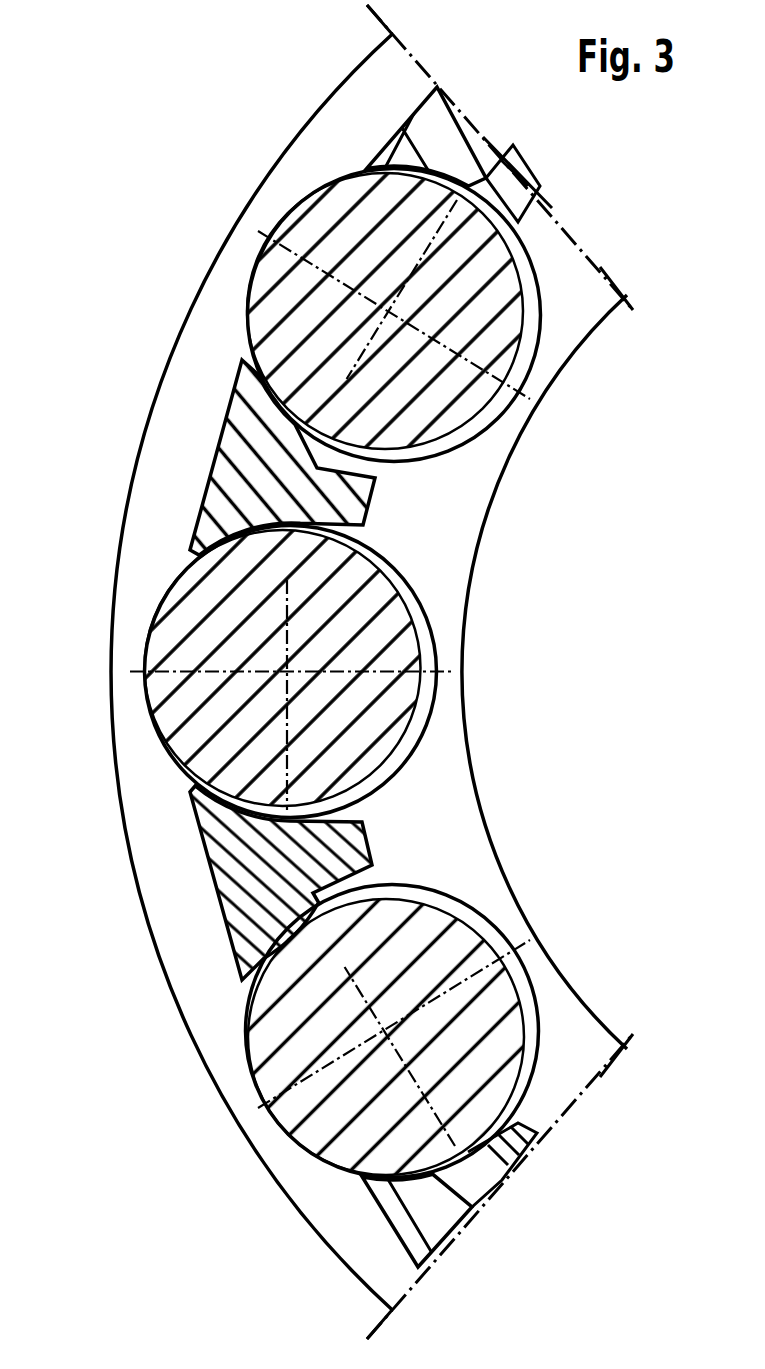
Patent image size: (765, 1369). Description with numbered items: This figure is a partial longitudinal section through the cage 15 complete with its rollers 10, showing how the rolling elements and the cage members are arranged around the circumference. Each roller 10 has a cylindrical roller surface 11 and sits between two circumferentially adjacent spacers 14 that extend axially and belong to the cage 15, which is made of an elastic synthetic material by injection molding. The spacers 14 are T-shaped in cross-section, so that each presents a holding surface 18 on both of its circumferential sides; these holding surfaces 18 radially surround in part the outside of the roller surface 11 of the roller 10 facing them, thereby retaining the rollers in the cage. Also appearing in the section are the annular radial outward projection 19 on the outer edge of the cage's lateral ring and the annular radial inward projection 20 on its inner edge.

The roller 10 is at (336, 273).
The cylindrical roller surface 11 is at (283, 196).
The spacer 14 is at (215, 897).
The cage 15 is at (327, 672).
The holding surface 18 is at (270, 552).
The radial outward projection 19 is at (95, 636).
The radial inward projection 20 is at (494, 498).